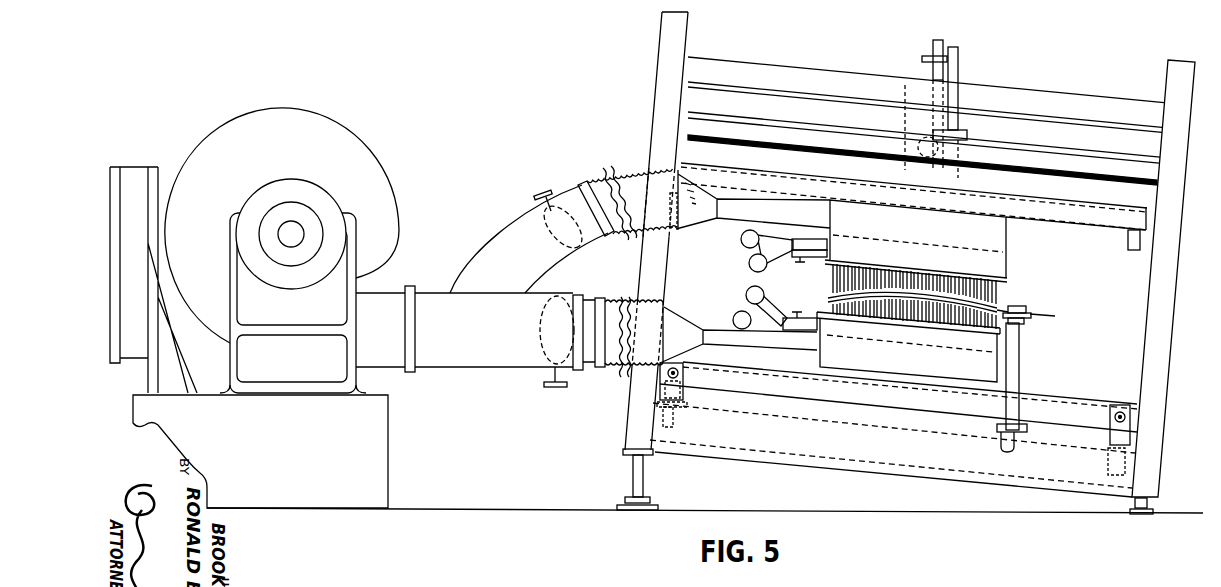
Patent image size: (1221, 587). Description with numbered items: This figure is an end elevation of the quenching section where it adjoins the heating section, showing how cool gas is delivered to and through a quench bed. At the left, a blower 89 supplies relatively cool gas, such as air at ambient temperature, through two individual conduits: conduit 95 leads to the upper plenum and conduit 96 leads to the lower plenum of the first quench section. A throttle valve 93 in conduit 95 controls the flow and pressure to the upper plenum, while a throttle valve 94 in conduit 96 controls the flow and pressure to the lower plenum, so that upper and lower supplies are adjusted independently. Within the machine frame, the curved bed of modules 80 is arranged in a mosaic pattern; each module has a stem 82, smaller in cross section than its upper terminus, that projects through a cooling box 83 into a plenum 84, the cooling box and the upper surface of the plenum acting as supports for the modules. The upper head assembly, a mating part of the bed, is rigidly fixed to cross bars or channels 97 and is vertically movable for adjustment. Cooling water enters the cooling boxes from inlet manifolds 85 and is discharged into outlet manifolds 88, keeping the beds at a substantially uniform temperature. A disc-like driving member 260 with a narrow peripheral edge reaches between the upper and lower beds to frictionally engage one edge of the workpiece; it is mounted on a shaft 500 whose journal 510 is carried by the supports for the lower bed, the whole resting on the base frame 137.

The blower 89 is at (373, 163).
The throttle valve 93 is at (544, 192).
The conduit 95 is at (505, 243).
The conduit 96 is at (519, 361).
The throttle valve 94 is at (557, 388).
The cross bars or channels 97 is at (914, 206).
The inlet manifolds 85 is at (750, 267).
The outlet manifolds 88 is at (735, 318).
The bed of modules 80 is at (810, 303).
The stem 82 is at (822, 308).
The cooling box 83 is at (914, 323).
The plenum 84 is at (908, 350).
The base frame 137 is at (893, 429).
The disc-like driving member 260 is at (1030, 312).
The shaft 500 is at (1018, 378).
The journal 510 is at (1023, 431).